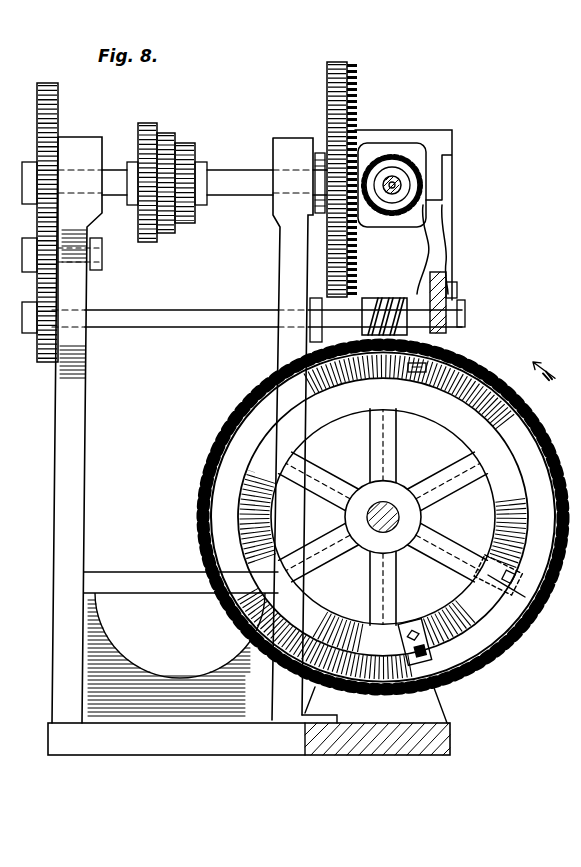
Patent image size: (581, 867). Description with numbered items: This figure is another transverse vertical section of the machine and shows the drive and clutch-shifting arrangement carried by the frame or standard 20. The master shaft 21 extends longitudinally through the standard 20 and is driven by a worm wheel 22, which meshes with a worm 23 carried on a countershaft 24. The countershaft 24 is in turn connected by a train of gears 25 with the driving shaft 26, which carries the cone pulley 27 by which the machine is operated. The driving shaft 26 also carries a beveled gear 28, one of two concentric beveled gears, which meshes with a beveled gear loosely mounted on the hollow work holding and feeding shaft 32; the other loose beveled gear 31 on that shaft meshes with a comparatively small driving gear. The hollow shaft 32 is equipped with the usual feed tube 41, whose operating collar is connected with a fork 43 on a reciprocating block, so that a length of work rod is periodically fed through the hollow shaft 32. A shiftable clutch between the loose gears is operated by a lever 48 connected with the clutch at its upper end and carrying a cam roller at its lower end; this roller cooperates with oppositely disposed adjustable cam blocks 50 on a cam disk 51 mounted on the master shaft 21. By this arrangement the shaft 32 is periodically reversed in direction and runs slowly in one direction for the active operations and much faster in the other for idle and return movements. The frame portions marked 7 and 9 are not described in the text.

The frame 7 is at (8, 372).
The shaft 9 is at (12, 228).
The frame or standard 20 is at (266, 228).
The master shaft 21 is at (362, 517).
The worm wheel 22 is at (362, 517).
The worm 23 is at (390, 304).
The countershaft 24 is at (214, 318).
The train of gears 25 is at (40, 246).
The driving shaft 26 is at (236, 176).
The cone pulley 27 is at (197, 146).
The beveled gear 28 is at (331, 62).
The beveled gear 31 is at (420, 216).
The hollow work holding and feeding shaft 32 is at (404, 196).
The feed tube 41 is at (396, 185).
The fork 43 is at (426, 371).
The lever 48 is at (433, 259).
The adjustable cam blocks 50 is at (538, 574).
The cam disk 51 is at (487, 636).